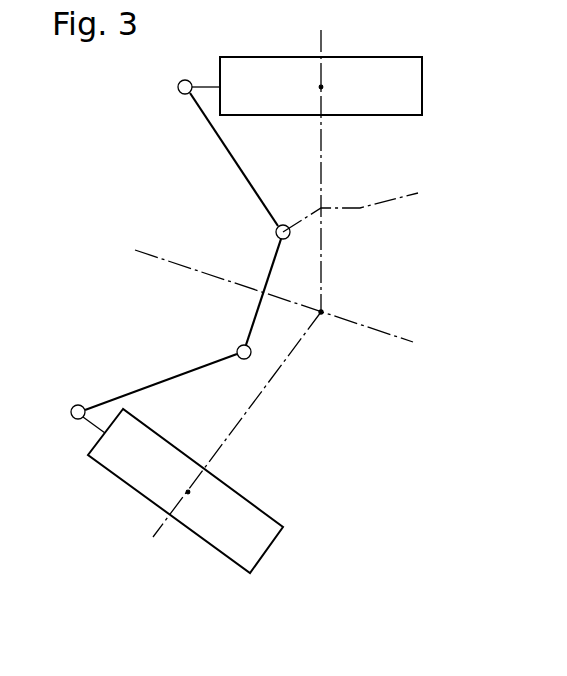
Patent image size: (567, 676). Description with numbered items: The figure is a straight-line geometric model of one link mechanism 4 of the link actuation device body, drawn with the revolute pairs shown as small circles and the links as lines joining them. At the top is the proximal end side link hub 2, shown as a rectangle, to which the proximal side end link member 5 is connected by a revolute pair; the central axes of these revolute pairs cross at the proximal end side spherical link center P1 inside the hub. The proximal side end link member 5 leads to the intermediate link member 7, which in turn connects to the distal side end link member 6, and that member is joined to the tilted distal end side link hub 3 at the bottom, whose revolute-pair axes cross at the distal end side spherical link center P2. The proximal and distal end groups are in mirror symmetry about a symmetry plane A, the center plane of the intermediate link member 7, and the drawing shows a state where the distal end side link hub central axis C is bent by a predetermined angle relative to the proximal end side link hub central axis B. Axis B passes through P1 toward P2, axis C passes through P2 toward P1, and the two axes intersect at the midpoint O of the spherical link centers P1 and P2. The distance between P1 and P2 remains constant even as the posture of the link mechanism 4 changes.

The proximal end side link hub 2 is at (422, 87).
The distal end side link hub 3 is at (270, 552).
The link mechanism 4 is at (165, 291).
The proximal side end link member 5 is at (232, 160).
The distal side end link member 6 is at (160, 378).
The intermediate link member 7 is at (280, 245).
The proximal end side spherical link center P1 is at (321, 87).
The distal end side spherical link center P2 is at (188, 492).
The midpoint of the spherical link centers O is at (321, 312).
The symmetry plane A is at (365, 327).
The proximal end side link hub central axis B is at (362, 205).
The distal end side link hub central axis C is at (263, 397).